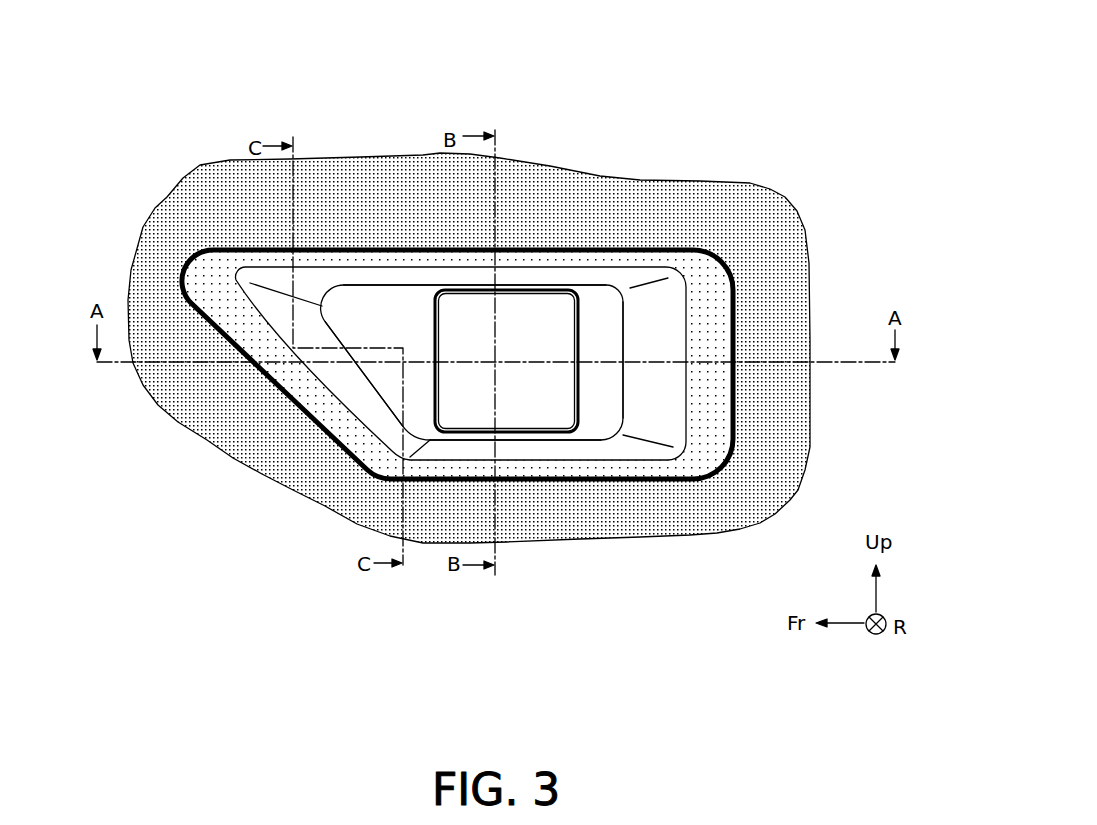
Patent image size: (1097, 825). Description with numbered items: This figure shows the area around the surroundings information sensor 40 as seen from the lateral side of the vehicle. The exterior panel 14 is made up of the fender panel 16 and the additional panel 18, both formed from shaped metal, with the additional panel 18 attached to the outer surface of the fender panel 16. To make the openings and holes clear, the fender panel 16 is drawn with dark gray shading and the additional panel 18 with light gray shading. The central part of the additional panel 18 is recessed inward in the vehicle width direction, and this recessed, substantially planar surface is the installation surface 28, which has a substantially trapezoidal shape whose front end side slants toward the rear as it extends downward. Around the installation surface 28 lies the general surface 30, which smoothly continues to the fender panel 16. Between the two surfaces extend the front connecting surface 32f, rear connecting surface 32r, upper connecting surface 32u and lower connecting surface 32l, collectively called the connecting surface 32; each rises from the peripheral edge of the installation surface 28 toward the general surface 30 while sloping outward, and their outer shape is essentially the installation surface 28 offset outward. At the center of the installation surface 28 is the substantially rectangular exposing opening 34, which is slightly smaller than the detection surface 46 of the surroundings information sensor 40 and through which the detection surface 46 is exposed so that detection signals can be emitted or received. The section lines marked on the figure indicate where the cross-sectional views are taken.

The exterior panel 14 is at (690, 139).
The fender panel 16 is at (414, 176).
The general surface 30 is at (716, 292).
The additional panel 18 is at (366, 248).
The connecting surface 32 is at (288, 272).
The upper connecting surface 32u is at (570, 276).
The rear connecting surface 32r is at (672, 407).
The lower connecting surface 32l is at (503, 453).
The front connecting surface 32f is at (325, 353).
The installation surface 28 is at (410, 370).
The detection surface 46 is at (520, 308).
The surroundings information sensor 40 is at (507, 361).
The exposing opening 34 is at (580, 383).